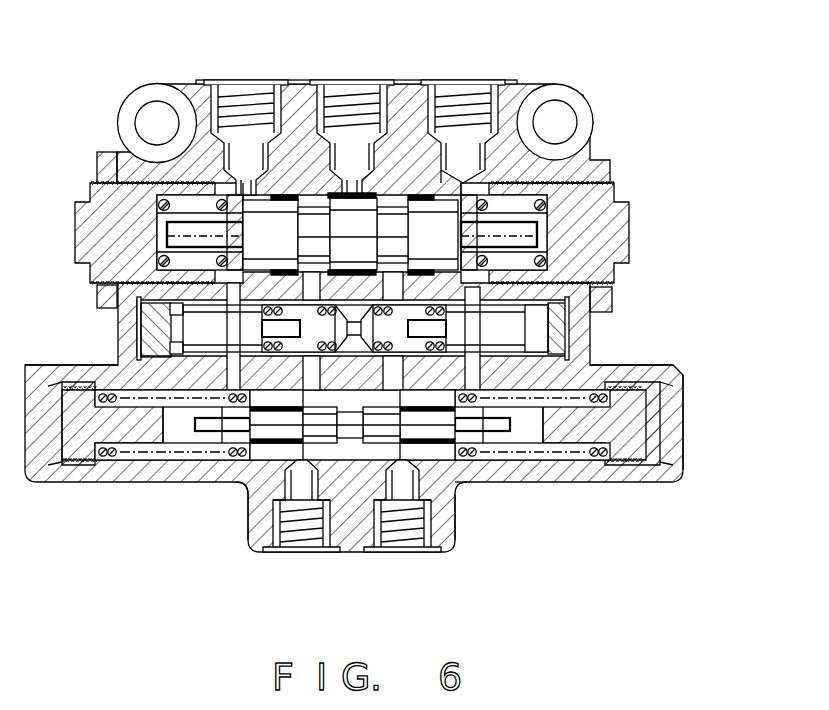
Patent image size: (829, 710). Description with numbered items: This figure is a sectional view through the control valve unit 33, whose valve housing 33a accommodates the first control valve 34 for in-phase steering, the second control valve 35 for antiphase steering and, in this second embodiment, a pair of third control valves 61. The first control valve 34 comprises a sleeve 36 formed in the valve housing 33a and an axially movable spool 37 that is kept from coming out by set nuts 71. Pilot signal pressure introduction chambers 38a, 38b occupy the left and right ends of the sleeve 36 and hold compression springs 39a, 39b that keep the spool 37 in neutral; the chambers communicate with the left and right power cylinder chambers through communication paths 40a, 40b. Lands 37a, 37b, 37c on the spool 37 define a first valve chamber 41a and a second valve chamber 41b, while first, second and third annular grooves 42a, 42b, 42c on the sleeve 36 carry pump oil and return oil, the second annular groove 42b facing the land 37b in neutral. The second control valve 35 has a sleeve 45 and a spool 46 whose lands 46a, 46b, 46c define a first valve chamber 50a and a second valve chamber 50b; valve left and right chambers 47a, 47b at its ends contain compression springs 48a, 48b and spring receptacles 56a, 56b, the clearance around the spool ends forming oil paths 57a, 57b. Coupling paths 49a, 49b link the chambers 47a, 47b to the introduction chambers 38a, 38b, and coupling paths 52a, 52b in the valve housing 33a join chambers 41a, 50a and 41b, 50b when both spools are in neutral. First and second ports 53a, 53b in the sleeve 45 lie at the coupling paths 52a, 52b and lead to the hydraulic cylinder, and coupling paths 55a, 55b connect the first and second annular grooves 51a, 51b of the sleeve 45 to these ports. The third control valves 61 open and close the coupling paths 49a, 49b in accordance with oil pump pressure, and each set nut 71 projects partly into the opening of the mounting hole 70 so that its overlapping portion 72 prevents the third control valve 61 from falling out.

The control valve unit 33 is at (610, 86).
The valve housing 33a is at (517, 84).
The first control valve 34 is at (396, 198).
The second control valve 35 is at (472, 484).
The sleeve 36 is at (138, 170).
The spool 37 is at (160, 234).
The land 37a is at (257, 197).
The land 37b is at (307, 198).
The land 37c is at (457, 188).
The pilot signal pressure introduction chamber 38a is at (110, 220).
The pilot signal pressure introduction chamber 38b is at (613, 193).
The compression spring 39a is at (93, 182).
The compression spring 39b is at (590, 160).
The communication path 40a is at (242, 66).
The communication path 40b is at (458, 65).
The first valve chamber 41a is at (283, 198).
The second valve chamber 41b is at (423, 198).
The first annular groove 42a is at (273, 198).
The second annular groove 42b is at (358, 198).
The third annular groove 42c is at (452, 198).
The sleeve 45 is at (642, 482).
The spool 46 is at (537, 463).
The land 46a is at (246, 500).
The land 46b is at (337, 550).
The land 46c is at (458, 492).
The valve left chamber 47a is at (175, 452).
The valve right chamber 47b is at (512, 462).
The compression spring 48a is at (93, 470).
The compression spring 48b is at (566, 462).
The coupling path 49a is at (230, 370).
The coupling path 49b is at (590, 362).
The first valve chamber 50a is at (306, 430).
The second valve chamber 50b is at (392, 430).
The first annular groove 51a is at (250, 545).
The second annular groove 51b is at (465, 485).
The coupling path 52a is at (292, 258).
The coupling path 52b is at (463, 240).
The first port 53a is at (305, 542).
The second port 53b is at (403, 545).
The coupling path 55a is at (273, 550).
The coupling path 55b is at (430, 550).
The spring receptacle 56a is at (207, 458).
The spring receptacle 56b is at (550, 470).
The oil path 57a is at (238, 468).
The oil path 57b is at (487, 480).
The third control valve 61 is at (124, 338).
The mounting hole 70 is at (565, 305).
The set nut 71 is at (98, 160).
The overlapping portion 72 is at (100, 306).